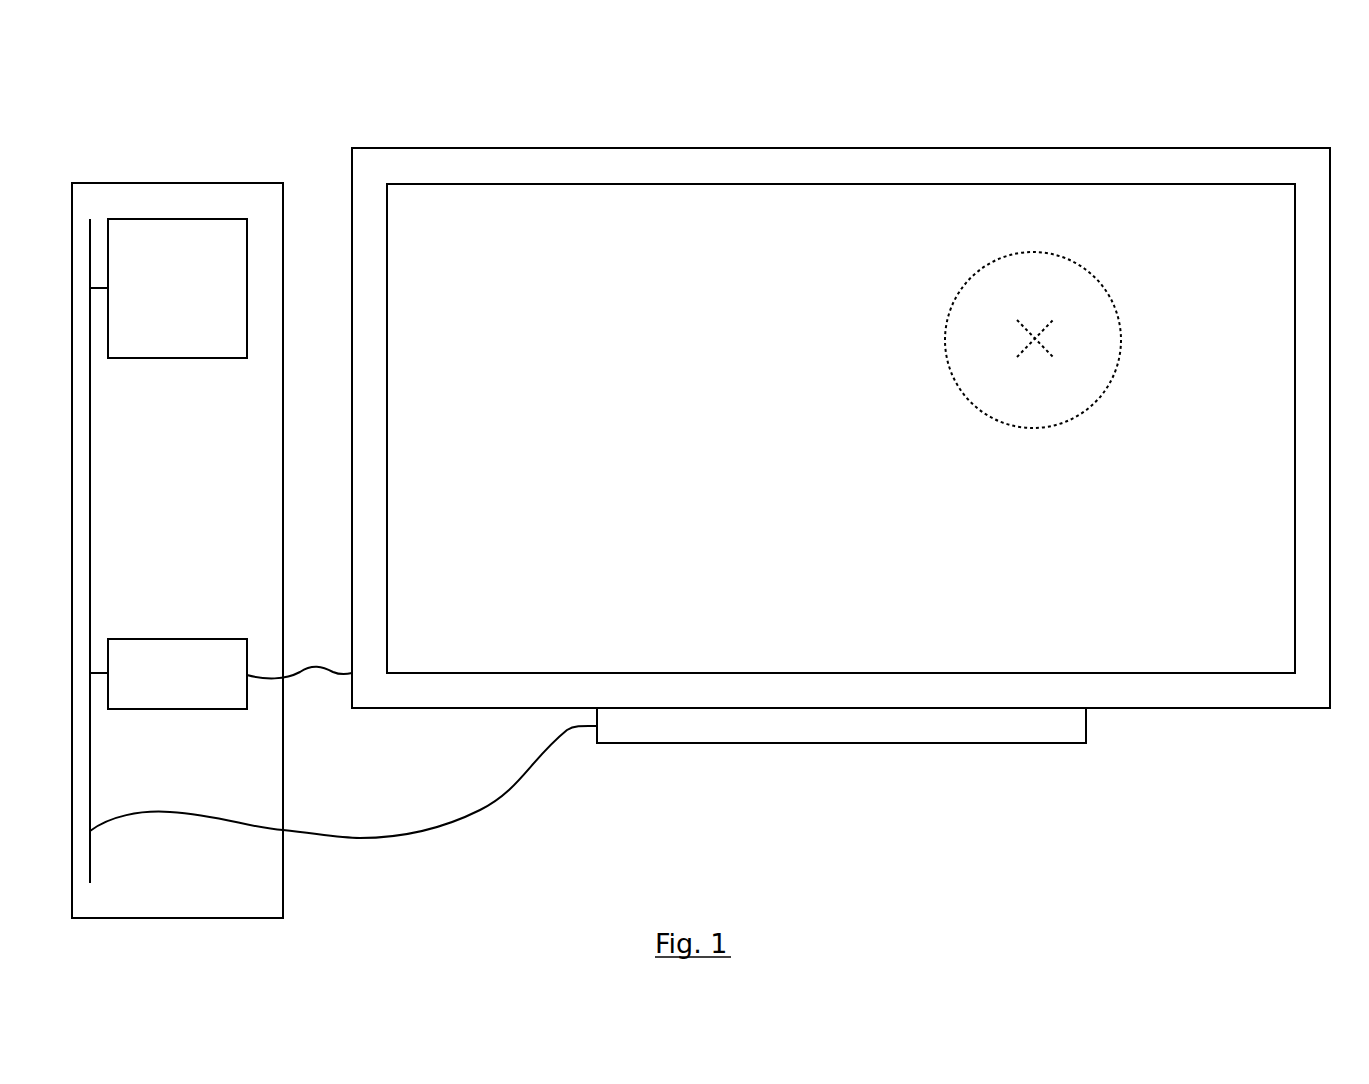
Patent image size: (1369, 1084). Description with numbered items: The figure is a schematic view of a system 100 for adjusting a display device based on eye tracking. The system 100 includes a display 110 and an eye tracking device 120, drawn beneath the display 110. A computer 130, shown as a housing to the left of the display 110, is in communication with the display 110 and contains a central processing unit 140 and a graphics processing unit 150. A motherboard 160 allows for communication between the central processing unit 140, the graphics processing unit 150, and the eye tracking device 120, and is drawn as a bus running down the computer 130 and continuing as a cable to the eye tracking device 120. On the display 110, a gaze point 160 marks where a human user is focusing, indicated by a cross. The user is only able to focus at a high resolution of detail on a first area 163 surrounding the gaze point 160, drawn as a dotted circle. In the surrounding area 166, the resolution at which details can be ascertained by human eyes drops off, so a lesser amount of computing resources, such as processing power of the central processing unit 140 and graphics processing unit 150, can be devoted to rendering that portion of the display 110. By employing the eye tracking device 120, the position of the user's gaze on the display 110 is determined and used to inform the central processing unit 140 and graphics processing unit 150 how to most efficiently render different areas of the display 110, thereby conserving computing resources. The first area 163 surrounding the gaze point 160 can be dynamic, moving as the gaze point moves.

The system 100 is at (146, 118).
The display 110 is at (1230, 148).
The eye tracking device 120 is at (1040, 743).
The computer 130 is at (247, 183).
The central processing unit 140 is at (247, 287).
The graphics processing unit 150 is at (248, 652).
The motherboard / gaze point 160 is at (90, 872).
The first area 163 is at (1120, 367).
The surrounding area 166 is at (809, 508).